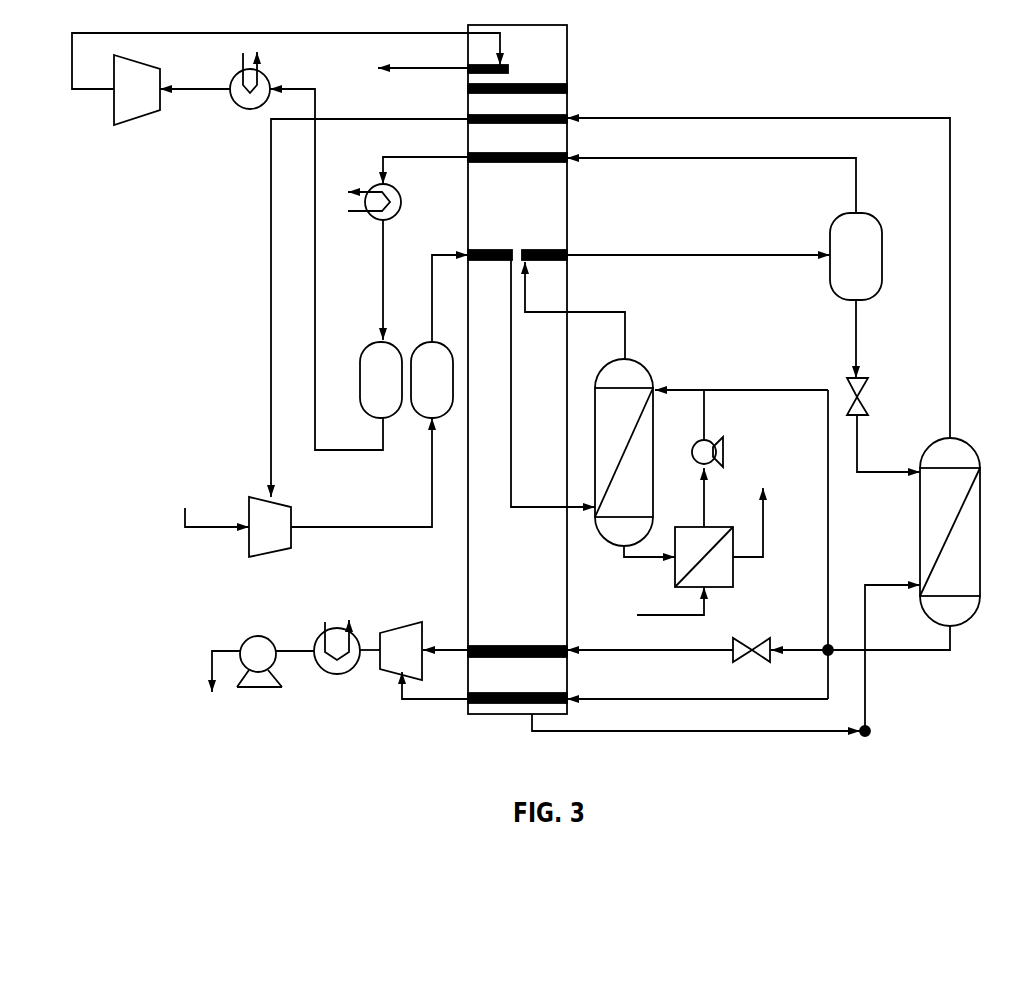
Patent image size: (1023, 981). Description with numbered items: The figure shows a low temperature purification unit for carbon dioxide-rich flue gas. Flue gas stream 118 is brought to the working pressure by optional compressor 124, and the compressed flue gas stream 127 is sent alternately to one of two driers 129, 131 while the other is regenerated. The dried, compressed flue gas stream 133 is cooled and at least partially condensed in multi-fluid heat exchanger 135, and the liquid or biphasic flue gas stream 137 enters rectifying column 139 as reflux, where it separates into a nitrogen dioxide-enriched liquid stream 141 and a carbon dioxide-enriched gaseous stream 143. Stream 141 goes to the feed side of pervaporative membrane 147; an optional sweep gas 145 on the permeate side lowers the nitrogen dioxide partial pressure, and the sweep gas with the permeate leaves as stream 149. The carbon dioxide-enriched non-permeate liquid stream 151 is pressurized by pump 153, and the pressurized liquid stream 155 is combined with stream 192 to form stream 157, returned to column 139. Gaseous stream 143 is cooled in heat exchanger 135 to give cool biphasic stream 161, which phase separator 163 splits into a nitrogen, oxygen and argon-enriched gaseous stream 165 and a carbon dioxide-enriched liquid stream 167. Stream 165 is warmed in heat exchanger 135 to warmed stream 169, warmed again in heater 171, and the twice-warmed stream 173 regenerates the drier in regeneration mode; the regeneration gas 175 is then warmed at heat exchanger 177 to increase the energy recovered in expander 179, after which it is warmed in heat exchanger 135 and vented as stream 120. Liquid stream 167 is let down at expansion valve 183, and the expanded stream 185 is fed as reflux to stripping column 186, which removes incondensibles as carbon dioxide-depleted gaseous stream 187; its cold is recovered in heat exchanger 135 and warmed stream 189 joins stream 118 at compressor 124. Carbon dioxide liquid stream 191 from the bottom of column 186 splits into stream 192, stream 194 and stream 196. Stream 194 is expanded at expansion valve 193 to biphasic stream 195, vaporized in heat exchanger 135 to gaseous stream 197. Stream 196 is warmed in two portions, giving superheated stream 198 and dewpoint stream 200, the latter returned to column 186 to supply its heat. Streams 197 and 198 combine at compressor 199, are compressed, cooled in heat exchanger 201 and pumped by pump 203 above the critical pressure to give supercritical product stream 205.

The flue gas stream 118 is at (185, 518).
The warmed, expanded stream 120 is at (447, 72).
The compressor 124 is at (258, 517).
The compressed flue gas stream 127 is at (390, 527).
The drier 129 is at (375, 390).
The drier 131 is at (430, 362).
The dried, compressed flue gas stream 133 is at (447, 255).
The multi-fluid heat exchanger 135 is at (543, 62).
The liquid or biphasic flue gas stream 137 is at (577, 512).
The rectifying column 139 is at (615, 375).
The NO2-enriched liquid stream 141 is at (648, 560).
The CO2-enriched gaseous stream 143 is at (625, 328).
The sweep gas 145 is at (680, 617).
The pervaporative separation membrane 147 is at (720, 572).
The combined sweep gas and NO2-enriched permeate stream 149 is at (766, 512).
The liquid stream 151 is at (704, 507).
The pump 153 is at (723, 452).
The pressurized liquid stream 155 is at (704, 412).
The stream 157 is at (683, 390).
The cool biphasic stream 161 is at (630, 255).
The phase separator 163 is at (855, 238).
The N2, O2, and Ar-enriched gaseous stream 165 is at (857, 192).
The CO2-enriched liquid stream 167 is at (857, 320).
The warmed stream 169 is at (430, 158).
The heater or heat exchanger 171 is at (376, 197).
The cooled stream 173 is at (382, 253).
The vapor stream 175 is at (315, 253).
The heat exchanger 177 is at (250, 103).
The expander 179 is at (138, 105).
The valve 183 is at (868, 407).
The expanded stream 185 is at (880, 475).
The stripping column 186 is at (958, 455).
The CO2-depleted gaseous stream 187 is at (950, 312).
The warmed stream 189 is at (372, 118).
The carbon dioxide liquid stream 191 is at (923, 652).
The stream 192 is at (828, 472).
The expansion valve 193 is at (760, 646).
The stream 194 is at (806, 652).
The biphasic stream 195 is at (648, 652).
The stream 196 is at (727, 699).
The gaseous stream 197 is at (442, 650).
The superheated stream 198 is at (403, 695).
The compressor 199 is at (400, 645).
The stream 200 is at (715, 732).
The heat exchanger 201 is at (335, 665).
The pump 203 is at (255, 650).
The product stream 205 is at (212, 668).